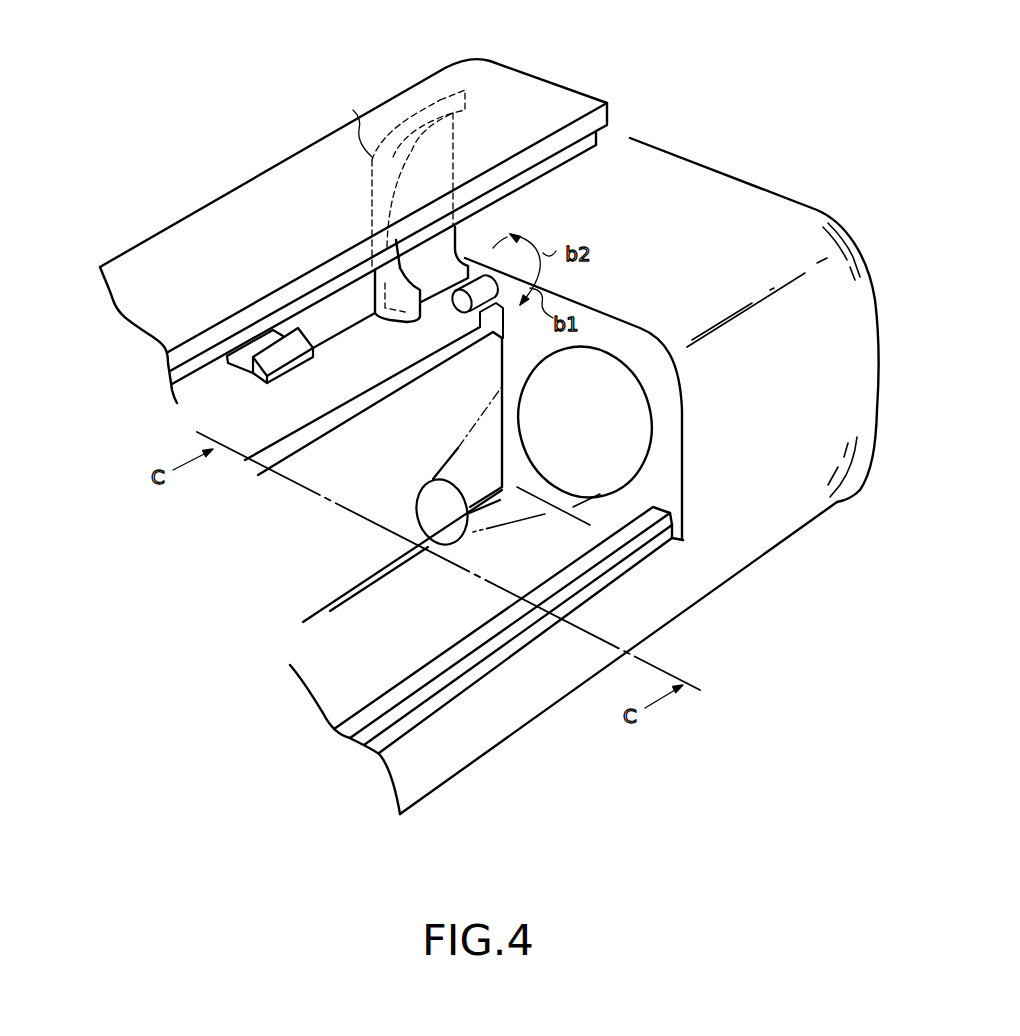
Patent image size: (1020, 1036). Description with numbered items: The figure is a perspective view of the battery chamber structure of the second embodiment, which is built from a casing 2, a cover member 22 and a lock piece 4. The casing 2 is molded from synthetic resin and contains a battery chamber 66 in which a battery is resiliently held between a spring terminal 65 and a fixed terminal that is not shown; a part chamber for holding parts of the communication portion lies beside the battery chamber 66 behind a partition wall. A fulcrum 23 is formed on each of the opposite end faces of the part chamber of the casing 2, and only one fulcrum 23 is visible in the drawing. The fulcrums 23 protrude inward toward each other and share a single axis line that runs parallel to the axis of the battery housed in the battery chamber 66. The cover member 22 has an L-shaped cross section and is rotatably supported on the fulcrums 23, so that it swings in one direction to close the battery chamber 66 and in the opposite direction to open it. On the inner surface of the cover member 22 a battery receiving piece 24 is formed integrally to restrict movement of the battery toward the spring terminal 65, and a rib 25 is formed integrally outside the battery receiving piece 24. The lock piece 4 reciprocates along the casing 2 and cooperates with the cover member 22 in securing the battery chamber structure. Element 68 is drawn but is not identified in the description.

The casing 2 is at (750, 226).
The lock piece 4 is at (256, 352).
The cover member 22 is at (553, 97).
The fulcrum 23 is at (465, 298).
The battery receiving piece 24 is at (353, 110).
The rib 25 is at (447, 100).
The spring terminal 65 is at (545, 515).
The battery chamber 66 is at (392, 670).
The guide rail 68 is at (488, 646).